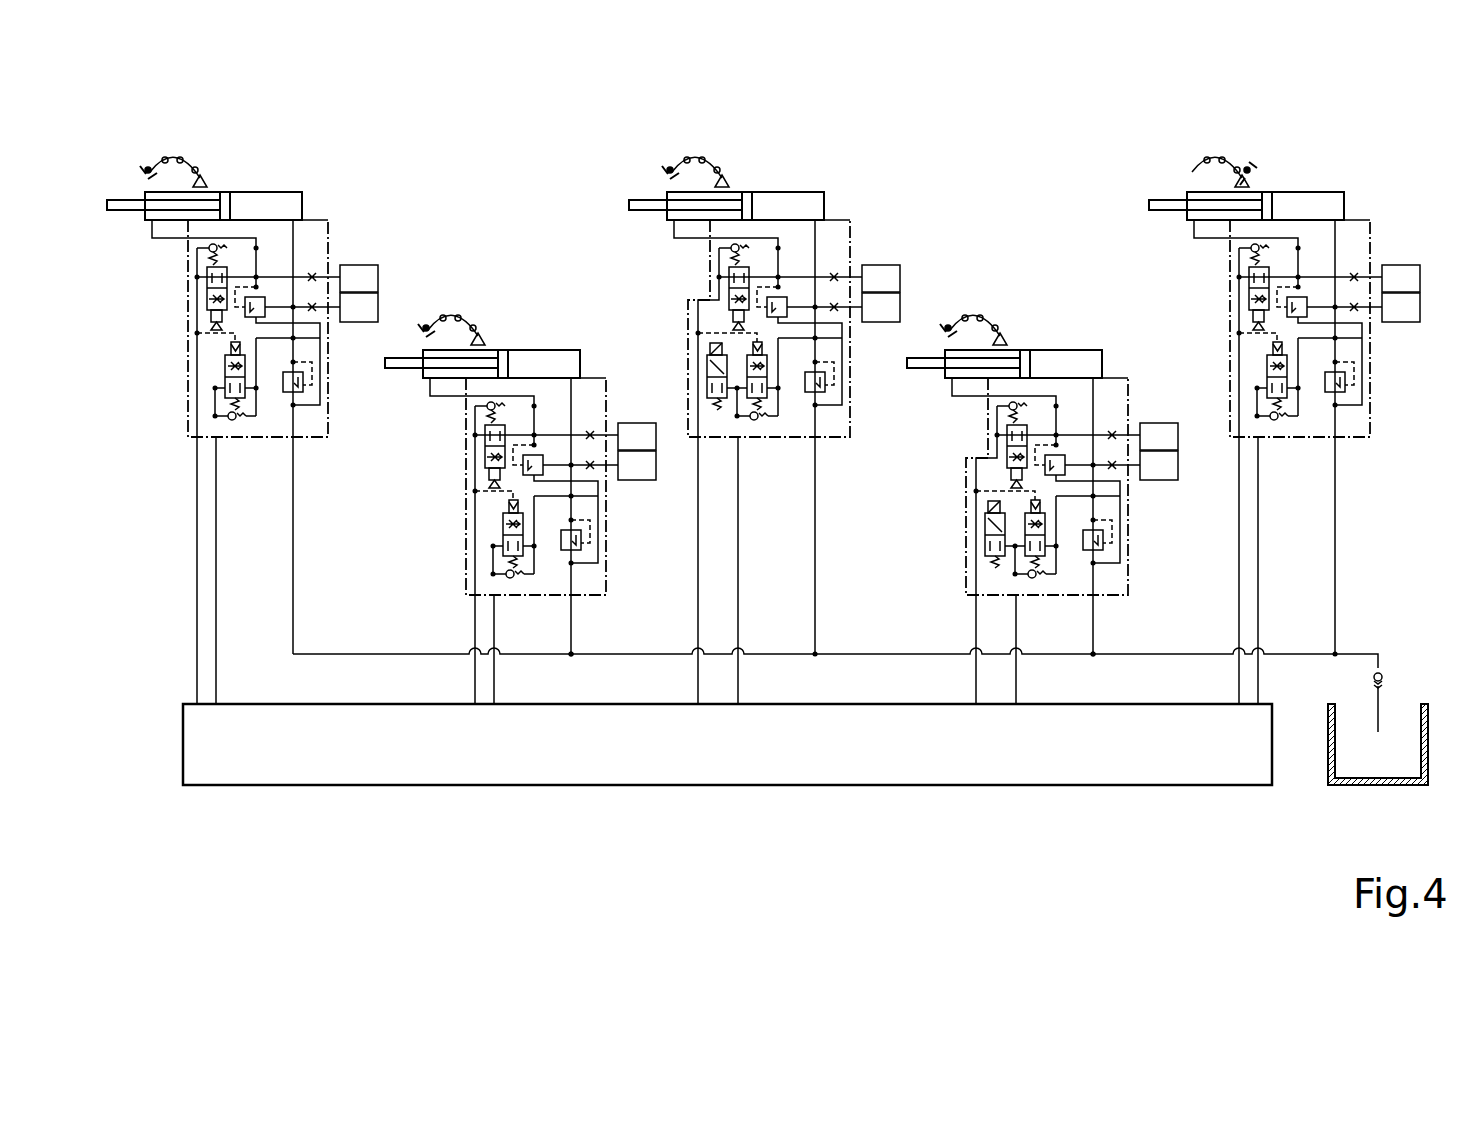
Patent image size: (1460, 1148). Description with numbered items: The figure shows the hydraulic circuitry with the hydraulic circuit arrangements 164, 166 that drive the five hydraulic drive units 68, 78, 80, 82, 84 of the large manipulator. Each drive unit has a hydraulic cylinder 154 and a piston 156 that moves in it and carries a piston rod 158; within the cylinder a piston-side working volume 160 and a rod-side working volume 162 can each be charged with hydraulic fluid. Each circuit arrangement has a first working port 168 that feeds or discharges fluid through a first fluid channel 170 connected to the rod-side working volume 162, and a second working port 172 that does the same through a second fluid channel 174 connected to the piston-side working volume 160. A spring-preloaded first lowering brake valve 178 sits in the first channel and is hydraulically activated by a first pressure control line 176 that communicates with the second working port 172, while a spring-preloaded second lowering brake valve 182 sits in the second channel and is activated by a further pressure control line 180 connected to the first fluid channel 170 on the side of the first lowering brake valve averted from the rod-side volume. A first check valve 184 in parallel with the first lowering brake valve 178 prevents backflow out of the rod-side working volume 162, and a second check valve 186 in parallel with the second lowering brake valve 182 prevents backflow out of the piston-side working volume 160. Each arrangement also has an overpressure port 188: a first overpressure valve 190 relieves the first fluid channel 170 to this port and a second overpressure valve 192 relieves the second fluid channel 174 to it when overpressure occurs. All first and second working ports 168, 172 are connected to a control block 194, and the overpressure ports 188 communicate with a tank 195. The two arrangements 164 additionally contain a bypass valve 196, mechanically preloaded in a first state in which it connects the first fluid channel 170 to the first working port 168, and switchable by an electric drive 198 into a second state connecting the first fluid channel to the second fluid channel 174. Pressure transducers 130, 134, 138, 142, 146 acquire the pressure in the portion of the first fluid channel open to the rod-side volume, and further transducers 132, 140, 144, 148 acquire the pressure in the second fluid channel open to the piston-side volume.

The hydraulic drive unit 68 is at (1284, 392).
The hydraulic drive unit 78 is at (1040, 482).
The hydraulic drive unit 80 is at (785, 392).
The hydraulic drive unit 82 is at (529, 482).
The hydraulic drive unit 84 is at (319, 165).
The operating state acquisition device 130 is at (378, 280).
The further operating state acquisition device 132 is at (355, 322).
The operating state acquisition device 134 is at (637, 425).
The operating state acquisition device 138 is at (913, 279).
The further operating state acquisition device 140 is at (881, 337).
The operating state acquisition device 142 is at (1159, 410).
The further operating state acquisition device 144 is at (1159, 497).
The operating state acquisition device 146 is at (1399, 251).
The further operating state acquisition device 148 is at (1399, 337).
The hydraulic cylinder 154 is at (280, 190).
The piston 156 is at (222, 190).
The piston rod 158 is at (113, 196).
The piston-side working volume 160 is at (303, 208).
The rod-side working volume 162 is at (148, 216).
The hydraulic circuit arrangement 164 is at (805, 329).
The hydraulic circuit arrangement 166 is at (330, 428).
The first working port 168 is at (197, 437).
The first fluid channel 170 is at (197, 410).
The second working port 172 is at (216, 437).
The second fluid channel 174 is at (293, 230).
The first pressure control line 176 is at (224, 366).
The first lowering brake valve 178 is at (206, 283).
The further pressure control line 180 is at (205, 330).
The second lowering brake valve 182 is at (256, 395).
The first check valve 184 is at (208, 248).
The second check valve 186 is at (234, 421).
The overpressure port 188 is at (293, 437).
The first overpressure valve 190 is at (262, 298).
The second overpressure valve 192 is at (303, 387).
The control block 194 is at (745, 757).
The tank 195 is at (1377, 786).
The bypass valve 196 is at (682, 350).
The electric drive 198 is at (675, 323).